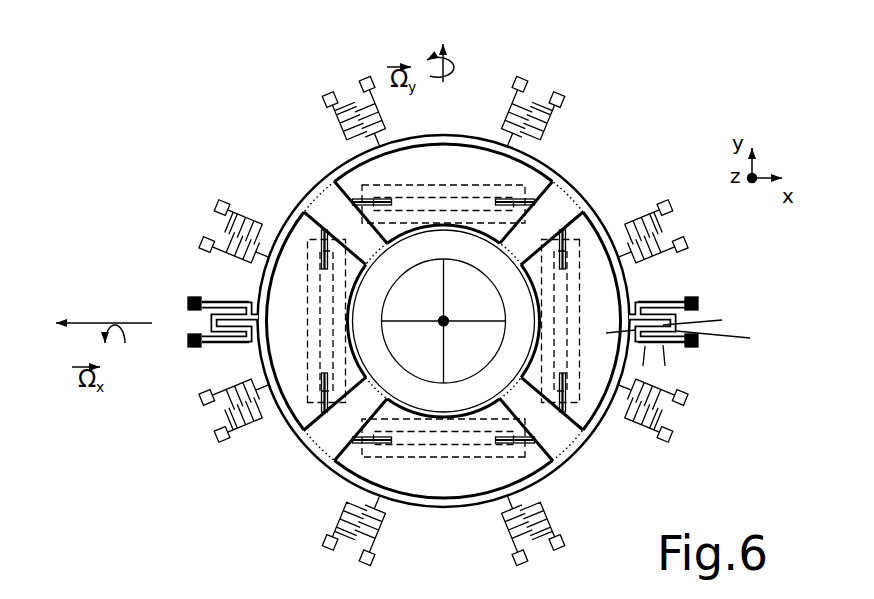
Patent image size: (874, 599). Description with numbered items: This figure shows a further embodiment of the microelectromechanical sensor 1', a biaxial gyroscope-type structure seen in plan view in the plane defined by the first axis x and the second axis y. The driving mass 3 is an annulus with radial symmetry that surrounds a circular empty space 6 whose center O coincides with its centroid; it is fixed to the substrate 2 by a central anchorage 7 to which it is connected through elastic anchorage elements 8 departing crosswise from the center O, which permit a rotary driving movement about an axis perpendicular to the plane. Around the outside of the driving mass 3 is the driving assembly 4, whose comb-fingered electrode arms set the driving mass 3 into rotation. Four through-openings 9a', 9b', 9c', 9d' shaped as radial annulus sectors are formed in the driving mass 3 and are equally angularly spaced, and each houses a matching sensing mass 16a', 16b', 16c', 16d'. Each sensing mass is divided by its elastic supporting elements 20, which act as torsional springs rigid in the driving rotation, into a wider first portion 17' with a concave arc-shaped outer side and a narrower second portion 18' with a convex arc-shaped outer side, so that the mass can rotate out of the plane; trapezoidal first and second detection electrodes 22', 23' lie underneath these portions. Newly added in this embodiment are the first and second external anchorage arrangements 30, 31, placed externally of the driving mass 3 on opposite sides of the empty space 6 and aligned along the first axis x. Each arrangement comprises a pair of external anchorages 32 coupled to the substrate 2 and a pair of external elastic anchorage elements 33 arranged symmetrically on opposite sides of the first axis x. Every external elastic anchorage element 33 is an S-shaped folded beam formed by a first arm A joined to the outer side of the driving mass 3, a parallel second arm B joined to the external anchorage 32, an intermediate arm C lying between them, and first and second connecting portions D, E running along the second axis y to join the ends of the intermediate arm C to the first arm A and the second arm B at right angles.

The microelectromechanical sensor 1' is at (484, 285).
The substrate 2 is at (474, 304).
The driving mass 3 is at (558, 193).
The driving assembly 4 is at (332, 521).
The circular empty space 6 is at (412, 366).
The anchorage 7 is at (441, 325).
The elastic anchorage elements 8 is at (492, 323).
The through-opening 9a' is at (280, 356).
The through-opening 9b' is at (607, 360).
The through-opening 9c' is at (406, 157).
The through-opening 9d' is at (444, 498).
The sensing mass 16a' is at (278, 321).
The sensing mass 16b' is at (642, 365).
The sensing mass 16c' is at (485, 168).
The sensing mass 16d' is at (443, 493).
The first portion 17' is at (591, 222).
The second portion 18' is at (443, 320).
The elastic supporting elements 20 is at (556, 405).
The first detection electrode 22' is at (460, 321).
The second detection electrode 23' is at (439, 321).
The first external anchorage arrangement 30 is at (212, 298).
The second external anchorage arrangement 31 is at (703, 292).
The external anchorage 32 is at (190, 300).
The external elastic anchorage element 33 is at (238, 299).
The first arm A is at (700, 318).
The second arm B is at (643, 366).
The intermediate arm C is at (667, 367).
The first connecting portion D is at (721, 338).
The second connecting portion E is at (613, 335).